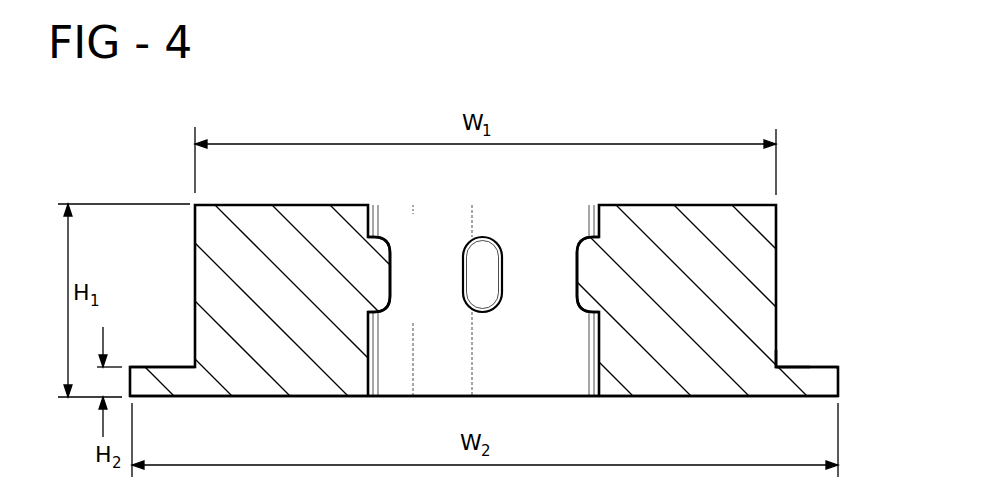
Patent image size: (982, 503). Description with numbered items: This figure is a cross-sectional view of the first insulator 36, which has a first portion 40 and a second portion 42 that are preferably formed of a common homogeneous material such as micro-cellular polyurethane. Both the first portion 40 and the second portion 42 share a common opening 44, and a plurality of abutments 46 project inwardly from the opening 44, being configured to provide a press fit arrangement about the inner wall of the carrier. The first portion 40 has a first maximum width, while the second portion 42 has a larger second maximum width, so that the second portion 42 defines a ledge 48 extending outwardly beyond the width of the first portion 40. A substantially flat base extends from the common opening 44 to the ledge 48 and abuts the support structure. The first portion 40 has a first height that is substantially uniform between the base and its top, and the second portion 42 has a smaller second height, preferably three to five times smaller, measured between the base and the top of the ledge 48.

The first insulator 36 is at (777, 233).
The first portion 40 is at (740, 293).
The second portion 42 is at (840, 377).
The common opening 44 is at (517, 260).
The abutments 46 is at (473, 255).
The ledge 48 is at (808, 366).